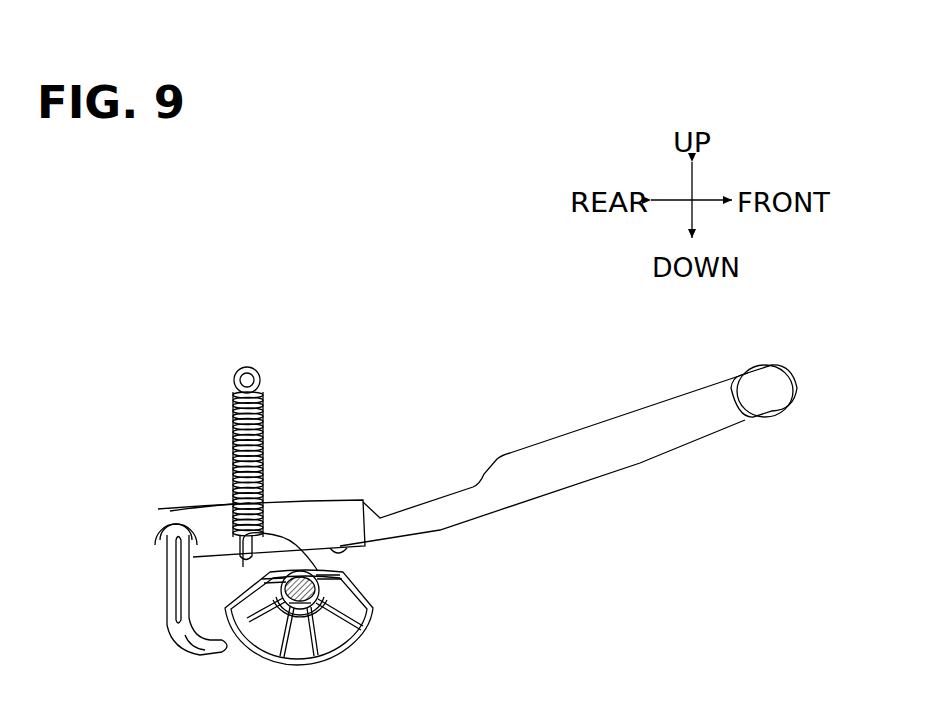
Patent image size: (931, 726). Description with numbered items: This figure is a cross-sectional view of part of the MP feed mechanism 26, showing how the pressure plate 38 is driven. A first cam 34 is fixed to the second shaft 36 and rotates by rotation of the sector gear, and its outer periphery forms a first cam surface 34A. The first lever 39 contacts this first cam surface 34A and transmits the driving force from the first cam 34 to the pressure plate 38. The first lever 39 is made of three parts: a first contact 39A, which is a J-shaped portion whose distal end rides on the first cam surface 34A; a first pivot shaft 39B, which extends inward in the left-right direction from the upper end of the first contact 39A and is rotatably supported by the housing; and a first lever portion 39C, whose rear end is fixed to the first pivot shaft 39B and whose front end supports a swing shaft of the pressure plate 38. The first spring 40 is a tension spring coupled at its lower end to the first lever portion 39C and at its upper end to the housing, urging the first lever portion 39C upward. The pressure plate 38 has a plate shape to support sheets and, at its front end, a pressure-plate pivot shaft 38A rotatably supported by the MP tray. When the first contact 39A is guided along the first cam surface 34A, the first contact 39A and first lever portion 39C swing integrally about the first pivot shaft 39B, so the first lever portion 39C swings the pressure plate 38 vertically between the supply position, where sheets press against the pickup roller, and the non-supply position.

The MP feed mechanism 26 is at (157, 371).
The first cam 34 is at (381, 605).
The first cam surface 34A is at (343, 649).
The second shaft 36 is at (311, 591).
The pressure plate 38 is at (582, 426).
The pressure-plate pivot shaft 38A is at (753, 367).
The first lever 39 is at (159, 568).
The first contact 39A is at (176, 641).
The first pivot shaft 39B is at (168, 513).
The first lever portion 39C is at (203, 506).
The first spring 40 is at (263, 407).